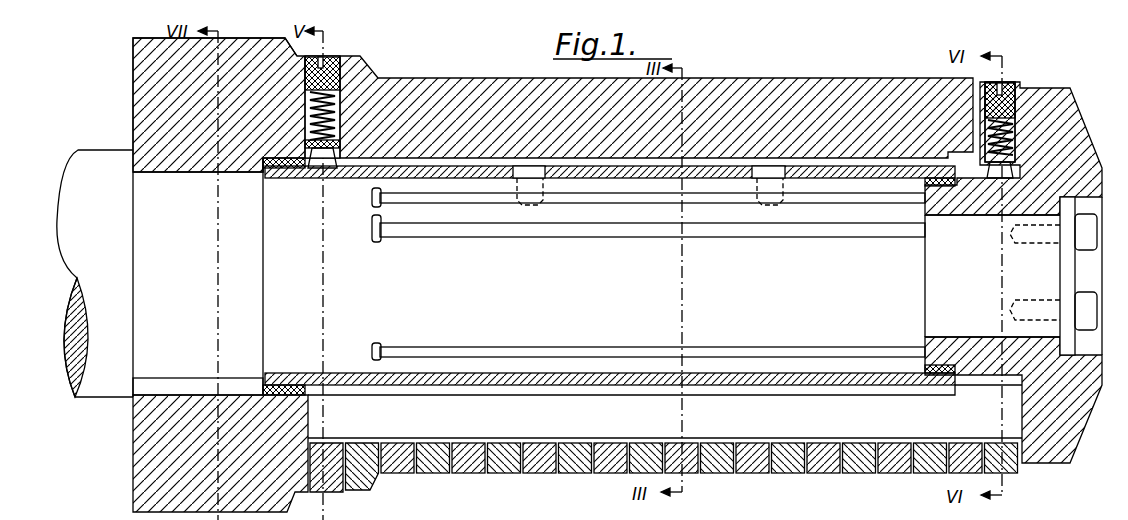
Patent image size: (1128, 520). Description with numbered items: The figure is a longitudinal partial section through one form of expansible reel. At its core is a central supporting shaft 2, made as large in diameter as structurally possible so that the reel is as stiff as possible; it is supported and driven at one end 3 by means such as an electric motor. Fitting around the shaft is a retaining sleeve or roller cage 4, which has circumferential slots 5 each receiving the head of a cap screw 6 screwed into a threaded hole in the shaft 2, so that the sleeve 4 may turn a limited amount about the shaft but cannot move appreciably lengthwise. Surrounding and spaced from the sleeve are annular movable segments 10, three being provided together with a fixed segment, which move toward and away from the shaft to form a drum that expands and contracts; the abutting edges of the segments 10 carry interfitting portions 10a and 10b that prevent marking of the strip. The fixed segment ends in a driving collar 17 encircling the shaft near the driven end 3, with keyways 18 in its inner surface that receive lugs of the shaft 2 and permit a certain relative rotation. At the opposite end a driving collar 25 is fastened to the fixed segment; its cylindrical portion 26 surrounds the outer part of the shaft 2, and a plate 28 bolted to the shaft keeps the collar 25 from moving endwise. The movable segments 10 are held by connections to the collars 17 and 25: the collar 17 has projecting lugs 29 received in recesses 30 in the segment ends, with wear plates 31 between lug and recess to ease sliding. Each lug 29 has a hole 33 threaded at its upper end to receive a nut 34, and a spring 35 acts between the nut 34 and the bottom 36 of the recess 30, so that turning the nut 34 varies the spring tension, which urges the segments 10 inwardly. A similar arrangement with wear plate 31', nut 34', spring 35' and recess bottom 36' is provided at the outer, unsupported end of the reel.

The central supporting shaft 2 is at (556, 295).
The end of shaft 3 is at (70, 230).
The retaining sleeve or roller cage 4 is at (709, 166).
The circumferential slot 5 is at (506, 166).
The cap screw 6 is at (530, 207).
The annular movable segment 10 is at (800, 92).
The interfitting portion 10a is at (338, 482).
The interfitting portion 10b is at (367, 465).
The driving collar 17 is at (153, 94).
The keyway 18 is at (171, 379).
The driving collar 25 is at (1068, 92).
The cylindrical portion 26 is at (970, 216).
The plate 28 is at (1074, 197).
The projecting lug 29 is at (341, 62).
The recess 30 is at (314, 160).
The wear plate 31 is at (357, 56).
The wear plate 31' is at (1019, 71).
The hole 33 is at (342, 96).
The nut 34 is at (328, 56).
The nut 34' is at (1022, 113).
The spring 35 is at (380, 100).
The spring 35' is at (1052, 130).
The bottom of recess 36 is at (330, 178).
The bottom of recess 36' is at (971, 219).